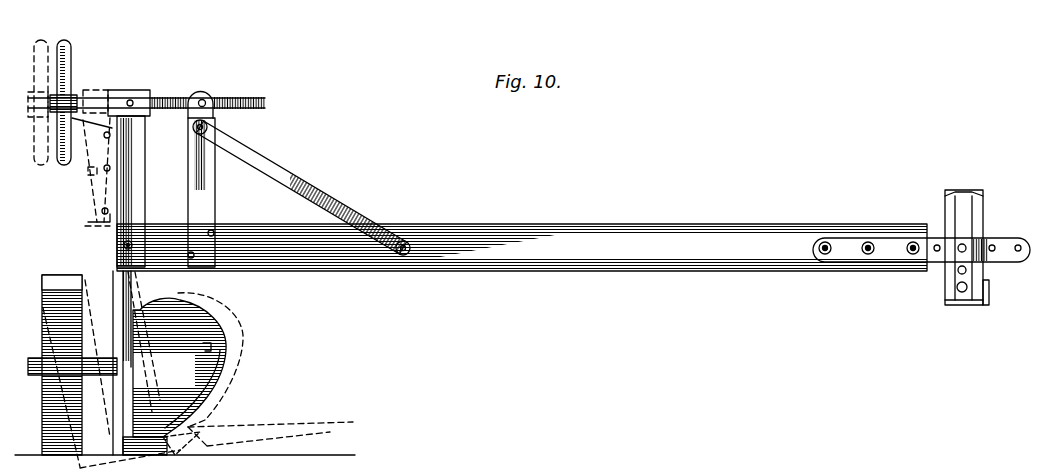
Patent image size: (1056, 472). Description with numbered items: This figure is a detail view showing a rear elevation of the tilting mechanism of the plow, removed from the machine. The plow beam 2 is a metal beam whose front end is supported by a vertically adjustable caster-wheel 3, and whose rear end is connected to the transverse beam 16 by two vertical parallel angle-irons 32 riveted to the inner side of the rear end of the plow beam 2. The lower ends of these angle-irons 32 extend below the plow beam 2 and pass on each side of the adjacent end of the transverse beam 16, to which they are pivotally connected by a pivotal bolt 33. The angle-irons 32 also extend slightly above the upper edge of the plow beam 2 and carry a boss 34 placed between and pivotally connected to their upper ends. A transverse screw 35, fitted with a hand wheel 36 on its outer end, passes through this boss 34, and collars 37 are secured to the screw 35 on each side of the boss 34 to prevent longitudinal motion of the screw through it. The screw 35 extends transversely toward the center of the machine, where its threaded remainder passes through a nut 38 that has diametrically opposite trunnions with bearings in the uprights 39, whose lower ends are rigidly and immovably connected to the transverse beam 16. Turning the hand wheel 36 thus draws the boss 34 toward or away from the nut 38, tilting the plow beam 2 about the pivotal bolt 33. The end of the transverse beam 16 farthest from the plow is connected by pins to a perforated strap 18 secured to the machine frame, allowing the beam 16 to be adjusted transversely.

The plow beam 2 is at (100, 222).
The caster-wheel 3 is at (57, 280).
The transverse beam 16 is at (522, 247).
The perforated strap 18 is at (960, 278).
The angle-irons 32 is at (140, 176).
The pivotal bolt 33 is at (121, 247).
The boss 34 is at (133, 106).
The transverse screw 35 is at (163, 100).
The hand wheel 36 is at (68, 62).
The collars 37 is at (110, 92).
The nut 38 is at (205, 100).
The uprights 39 is at (213, 193).